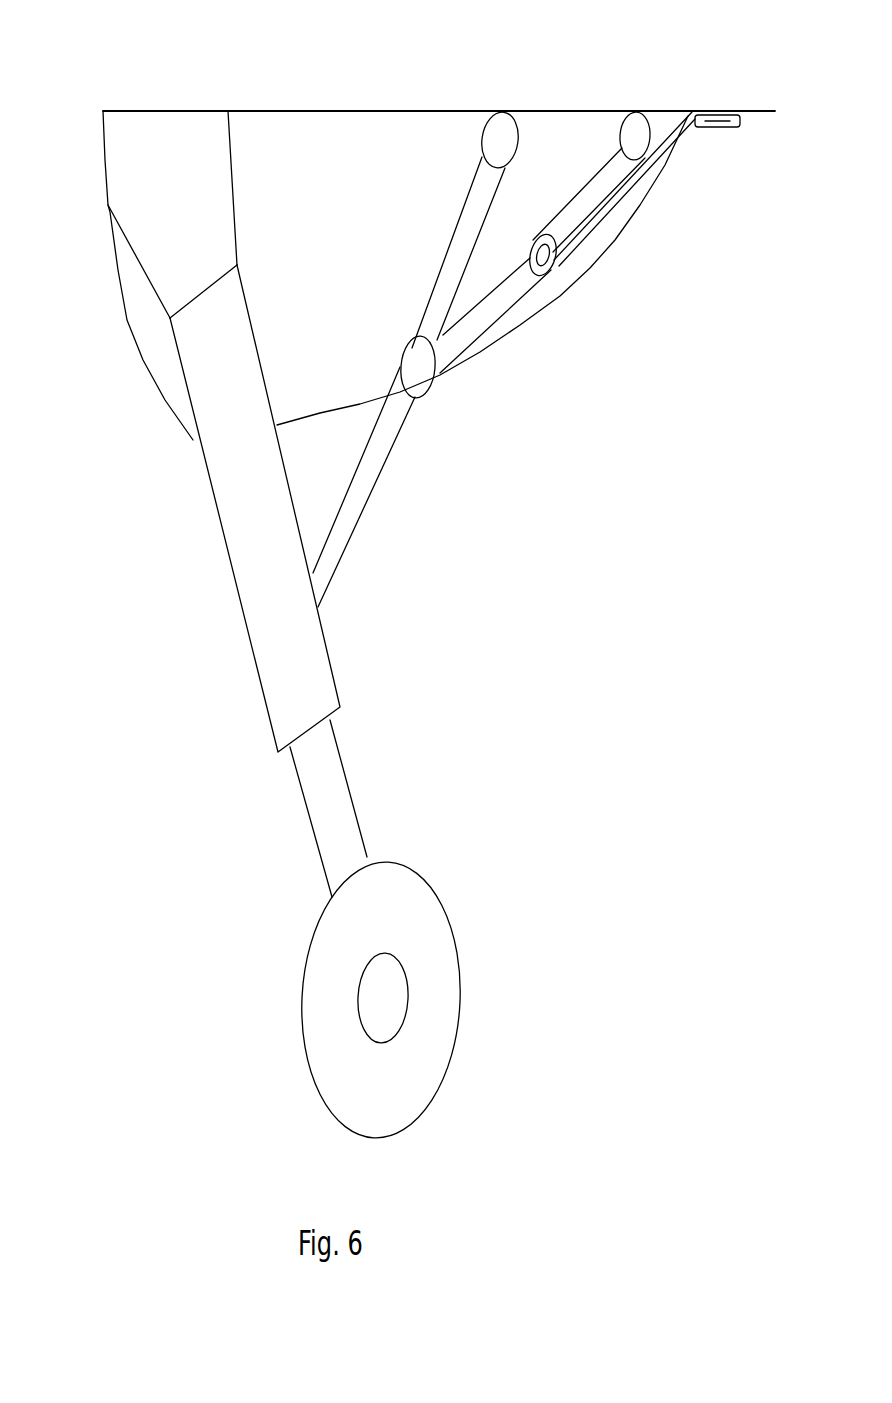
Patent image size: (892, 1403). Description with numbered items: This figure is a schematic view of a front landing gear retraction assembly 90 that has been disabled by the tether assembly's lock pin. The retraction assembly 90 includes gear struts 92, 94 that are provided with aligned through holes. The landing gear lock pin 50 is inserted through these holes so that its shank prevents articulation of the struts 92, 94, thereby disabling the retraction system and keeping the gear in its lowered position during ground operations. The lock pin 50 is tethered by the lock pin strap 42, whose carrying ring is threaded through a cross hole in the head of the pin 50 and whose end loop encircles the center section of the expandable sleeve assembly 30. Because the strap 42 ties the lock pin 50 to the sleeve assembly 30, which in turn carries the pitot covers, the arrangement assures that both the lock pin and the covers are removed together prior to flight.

The expandable sleeve assembly 30 is at (723, 128).
The lock pin strap 42 is at (610, 216).
The landing gear lock pin 50 is at (552, 272).
The front landing gear retraction assembly 90 is at (202, 738).
The gear strut 92 is at (505, 293).
The gear strut 94 is at (603, 177).